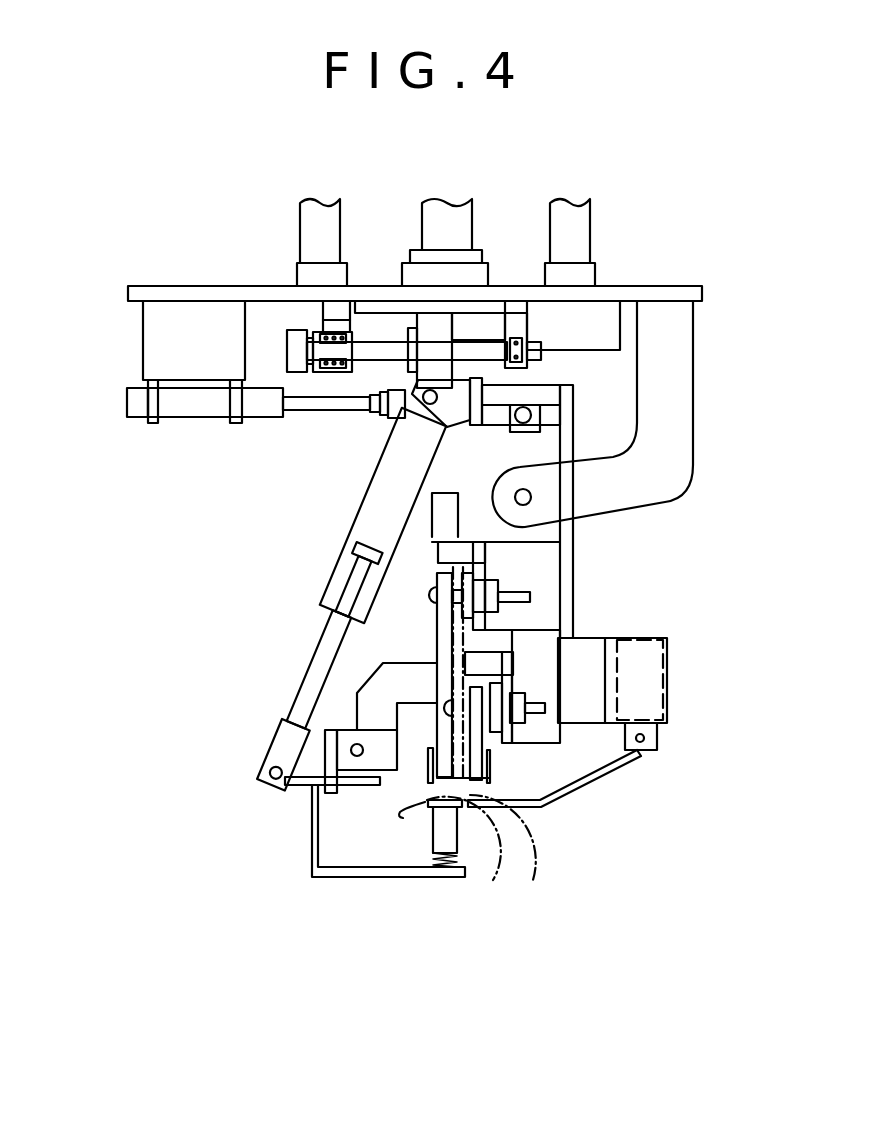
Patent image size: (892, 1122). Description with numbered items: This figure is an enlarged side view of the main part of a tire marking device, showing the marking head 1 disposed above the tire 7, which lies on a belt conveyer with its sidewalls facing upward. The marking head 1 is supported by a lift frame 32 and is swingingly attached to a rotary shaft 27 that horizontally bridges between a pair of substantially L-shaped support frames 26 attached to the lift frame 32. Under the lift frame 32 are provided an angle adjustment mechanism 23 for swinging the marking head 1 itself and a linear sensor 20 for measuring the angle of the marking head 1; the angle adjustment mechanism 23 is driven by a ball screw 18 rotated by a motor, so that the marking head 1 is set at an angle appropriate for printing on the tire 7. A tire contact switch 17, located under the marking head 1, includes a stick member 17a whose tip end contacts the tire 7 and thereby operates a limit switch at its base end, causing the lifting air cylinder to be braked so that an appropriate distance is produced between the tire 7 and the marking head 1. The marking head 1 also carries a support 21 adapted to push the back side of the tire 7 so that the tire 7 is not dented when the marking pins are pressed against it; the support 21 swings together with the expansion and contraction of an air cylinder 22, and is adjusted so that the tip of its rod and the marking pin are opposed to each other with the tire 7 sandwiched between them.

The marking head 1 is at (609, 606).
The tire 7 is at (532, 850).
The tire contact switch 17 is at (609, 779).
The stick member 17a is at (588, 783).
The ball screw 18 is at (483, 340).
The linear sensor 20 is at (196, 417).
The support 21 is at (432, 877).
The air cylinder 22 is at (328, 580).
The angle adjustment mechanism 23 is at (573, 379).
The support frame 26 is at (675, 408).
The rotary shaft 27 is at (531, 497).
The lift frame 32 is at (142, 293).